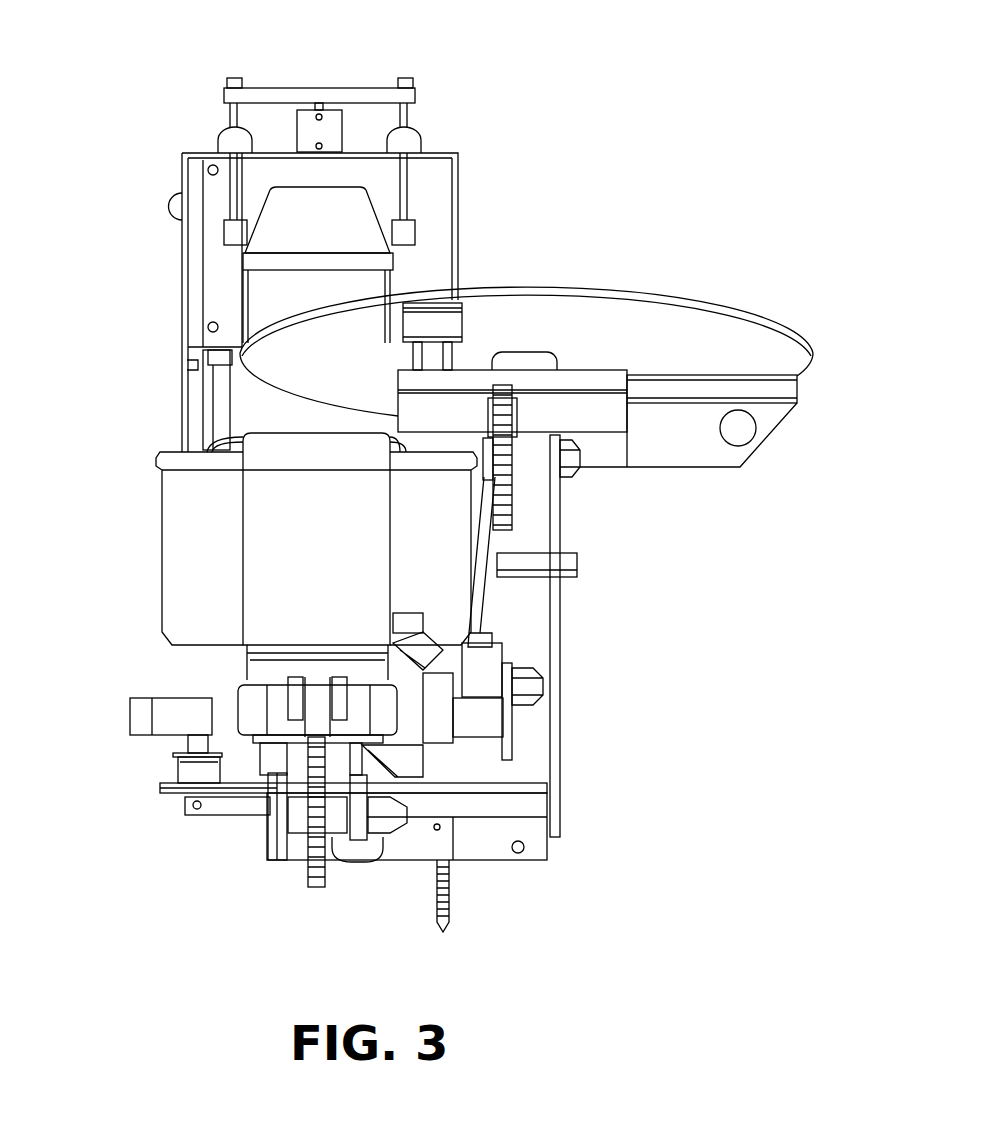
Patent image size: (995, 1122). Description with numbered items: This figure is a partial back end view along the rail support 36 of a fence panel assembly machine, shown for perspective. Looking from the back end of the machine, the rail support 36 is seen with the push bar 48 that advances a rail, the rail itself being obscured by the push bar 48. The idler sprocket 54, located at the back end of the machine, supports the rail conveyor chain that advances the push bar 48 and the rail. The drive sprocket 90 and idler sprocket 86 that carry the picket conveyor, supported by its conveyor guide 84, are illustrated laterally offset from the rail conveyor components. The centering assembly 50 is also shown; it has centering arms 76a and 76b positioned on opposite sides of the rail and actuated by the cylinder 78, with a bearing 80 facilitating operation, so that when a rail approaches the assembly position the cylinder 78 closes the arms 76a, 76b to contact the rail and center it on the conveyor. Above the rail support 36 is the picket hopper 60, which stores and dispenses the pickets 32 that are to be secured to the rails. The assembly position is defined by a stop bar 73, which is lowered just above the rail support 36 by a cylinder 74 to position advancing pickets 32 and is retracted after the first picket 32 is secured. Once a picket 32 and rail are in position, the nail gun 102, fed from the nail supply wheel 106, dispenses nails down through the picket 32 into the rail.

The picket 32 is at (597, 382).
The rail support 36 is at (282, 742).
The push bar 48 is at (250, 710).
The centering assembly 50 is at (138, 802).
The idler sprocket 54 is at (315, 822).
The picket hopper 60 is at (310, 553).
The stop bar 73 is at (208, 411).
The cylinder 74 is at (220, 271).
The centering arm 76a is at (167, 720).
The centering arm 76b is at (473, 715).
The cylinder 78 is at (217, 803).
The bearing 80 is at (202, 770).
The conveyor guide 84 is at (493, 547).
The idler sprocket 86 is at (503, 463).
The drive sprocket 90 is at (448, 873).
The nail gun 102 is at (323, 217).
The nail supply wheel 106 is at (490, 312).